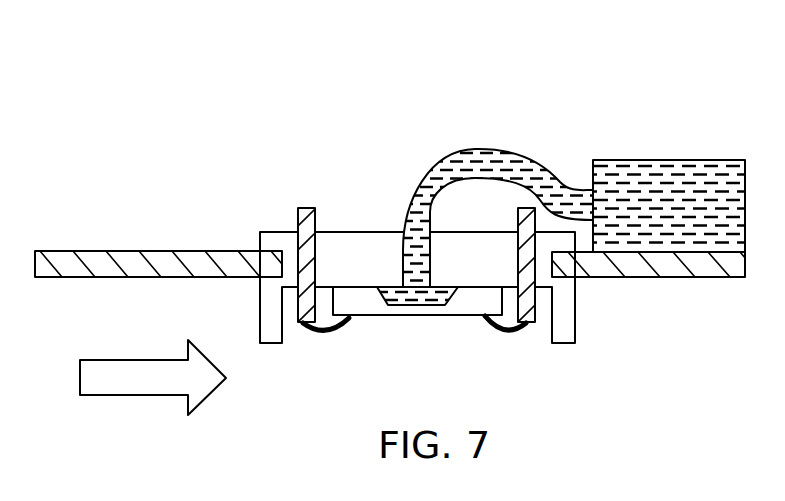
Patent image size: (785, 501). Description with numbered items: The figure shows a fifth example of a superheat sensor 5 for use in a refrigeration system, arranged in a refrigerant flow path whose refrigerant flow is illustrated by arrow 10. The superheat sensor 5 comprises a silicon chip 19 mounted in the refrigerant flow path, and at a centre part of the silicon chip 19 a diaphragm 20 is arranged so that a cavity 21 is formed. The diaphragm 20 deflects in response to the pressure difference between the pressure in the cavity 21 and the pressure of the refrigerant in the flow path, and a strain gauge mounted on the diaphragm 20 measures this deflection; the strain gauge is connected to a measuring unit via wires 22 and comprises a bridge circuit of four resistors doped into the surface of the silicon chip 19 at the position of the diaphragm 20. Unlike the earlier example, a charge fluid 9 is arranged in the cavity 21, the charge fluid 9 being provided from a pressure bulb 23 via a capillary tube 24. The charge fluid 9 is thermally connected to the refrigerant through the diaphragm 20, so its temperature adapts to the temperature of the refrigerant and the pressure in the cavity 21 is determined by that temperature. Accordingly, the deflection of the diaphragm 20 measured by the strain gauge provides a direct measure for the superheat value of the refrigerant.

The superheat sensor 5 is at (549, 119).
The charge fluid 9 is at (428, 175).
The arrow 10 is at (118, 380).
The silicon chip 19 is at (481, 250).
The diaphragm 20 is at (385, 318).
The cavity 21 is at (398, 290).
The wires 22 is at (325, 333).
The pressure bulb 23 is at (678, 160).
The capillary tube 24 is at (485, 150).